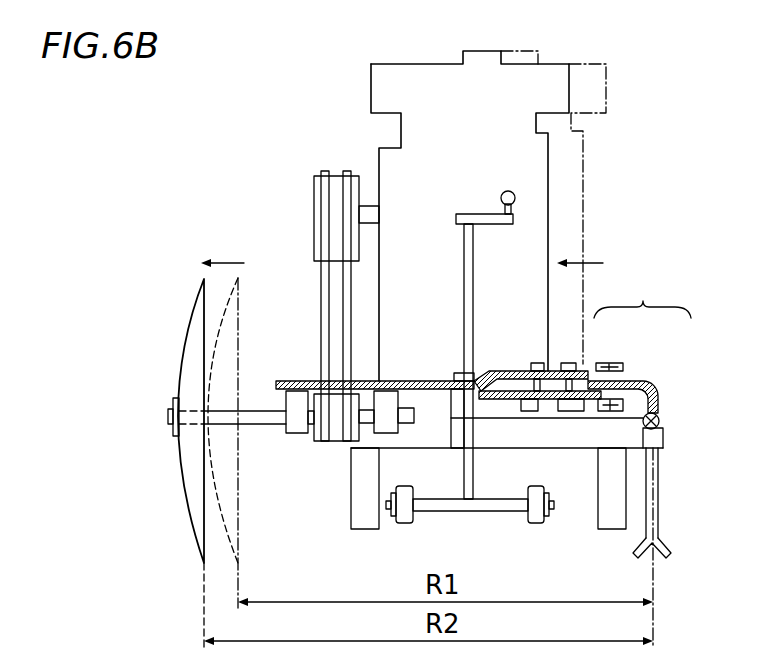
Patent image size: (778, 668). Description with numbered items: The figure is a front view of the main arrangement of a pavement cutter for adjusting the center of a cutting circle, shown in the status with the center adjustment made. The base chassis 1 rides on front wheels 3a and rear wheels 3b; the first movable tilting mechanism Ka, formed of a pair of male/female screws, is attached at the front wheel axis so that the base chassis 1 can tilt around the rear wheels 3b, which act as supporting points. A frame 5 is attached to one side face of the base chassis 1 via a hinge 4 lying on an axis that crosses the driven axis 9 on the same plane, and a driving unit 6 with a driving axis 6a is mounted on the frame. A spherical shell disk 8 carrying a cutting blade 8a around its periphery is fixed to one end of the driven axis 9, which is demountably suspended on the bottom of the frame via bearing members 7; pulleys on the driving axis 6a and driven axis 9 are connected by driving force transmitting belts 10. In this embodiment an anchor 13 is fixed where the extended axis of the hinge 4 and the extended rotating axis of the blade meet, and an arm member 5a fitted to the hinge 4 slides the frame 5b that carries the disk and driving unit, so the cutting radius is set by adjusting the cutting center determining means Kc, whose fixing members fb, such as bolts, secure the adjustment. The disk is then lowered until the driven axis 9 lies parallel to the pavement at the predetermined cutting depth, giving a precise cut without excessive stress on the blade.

The base chassis 1 is at (543, 447).
The front wheels 3a is at (400, 522).
The rear wheels 3b is at (358, 528).
The hinge 4 is at (659, 418).
The frame 5 is at (642, 297).
The arm member 5a is at (636, 378).
The frame 5b is at (428, 379).
The driving unit 6 is at (543, 170).
The driving axis 6a is at (367, 205).
The bearing members 7 is at (377, 433).
The spherical shell disk 8 is at (183, 340).
The cutting blade 8a is at (200, 279).
The driven axis 9 is at (248, 407).
The driving force transmitting belts 10 is at (322, 318).
The anchor 13 is at (657, 485).
The fixing members fb is at (570, 362).
The first movable tilting mechanism Ka is at (462, 265).
The cutting center determining means Kc is at (607, 281).